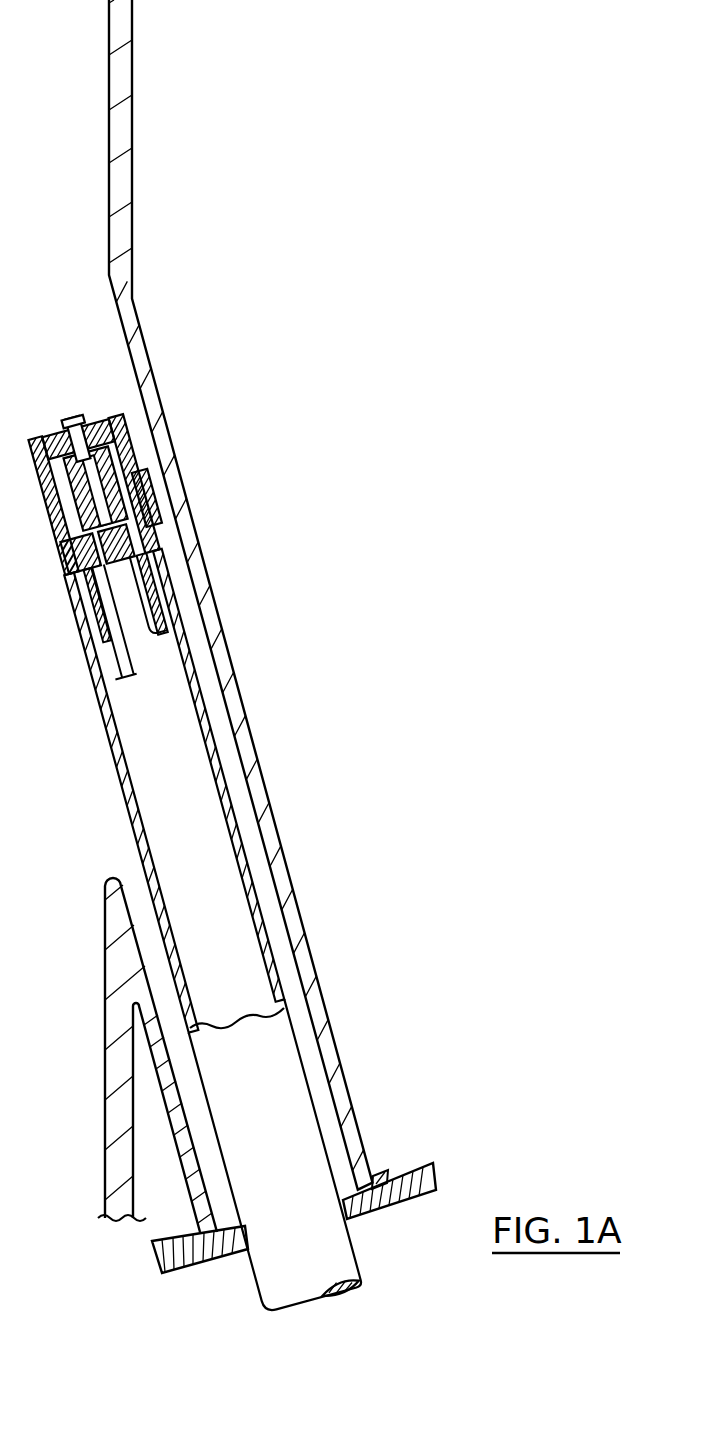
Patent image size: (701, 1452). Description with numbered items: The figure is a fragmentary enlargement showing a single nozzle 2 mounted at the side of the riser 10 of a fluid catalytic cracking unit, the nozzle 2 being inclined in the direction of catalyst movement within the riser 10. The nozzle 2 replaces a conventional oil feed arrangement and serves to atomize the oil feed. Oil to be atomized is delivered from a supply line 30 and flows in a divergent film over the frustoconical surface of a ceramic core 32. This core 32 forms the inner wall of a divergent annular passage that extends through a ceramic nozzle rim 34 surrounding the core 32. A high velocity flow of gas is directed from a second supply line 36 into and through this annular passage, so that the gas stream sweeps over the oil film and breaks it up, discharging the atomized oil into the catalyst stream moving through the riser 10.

The riser 10 is at (133, 200).
The nozzle 2 is at (148, 513).
The ceramic core 32 is at (50, 437).
The ceramic nozzle rim 34 is at (104, 414).
The supply line 30 is at (156, 624).
The supply line 36 is at (112, 664).